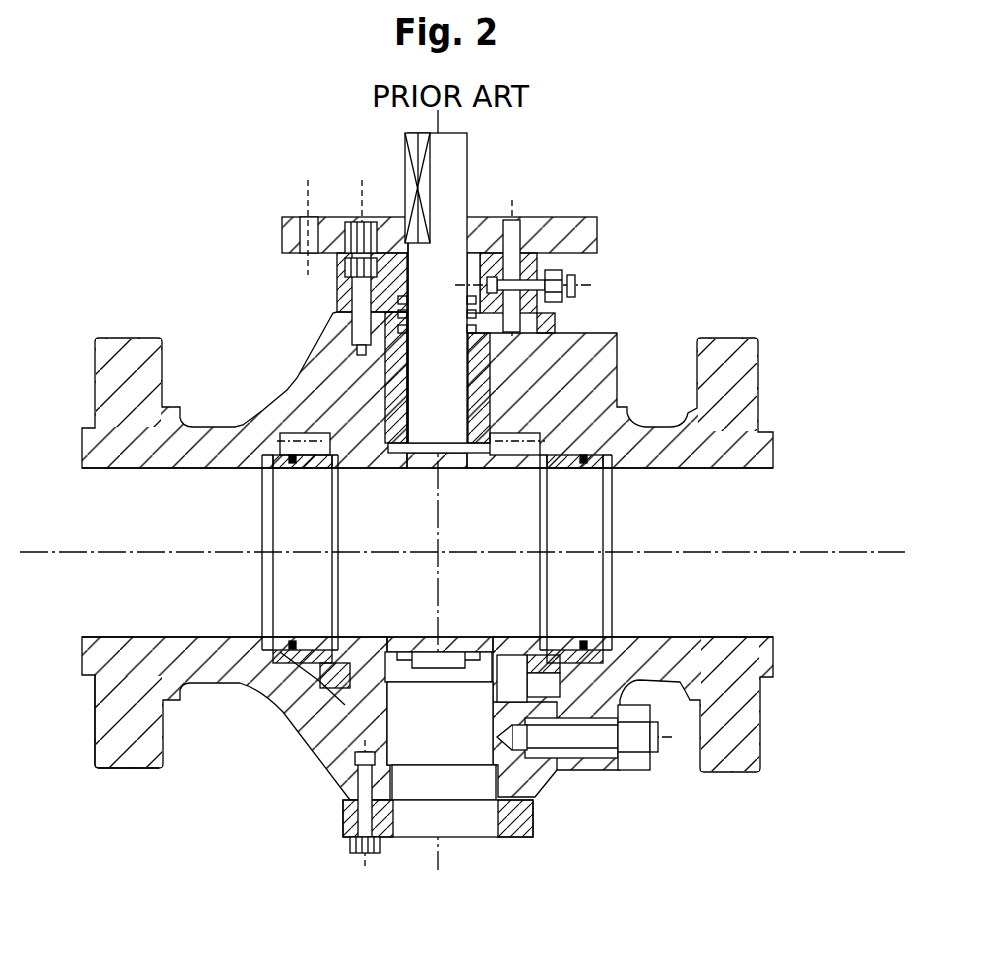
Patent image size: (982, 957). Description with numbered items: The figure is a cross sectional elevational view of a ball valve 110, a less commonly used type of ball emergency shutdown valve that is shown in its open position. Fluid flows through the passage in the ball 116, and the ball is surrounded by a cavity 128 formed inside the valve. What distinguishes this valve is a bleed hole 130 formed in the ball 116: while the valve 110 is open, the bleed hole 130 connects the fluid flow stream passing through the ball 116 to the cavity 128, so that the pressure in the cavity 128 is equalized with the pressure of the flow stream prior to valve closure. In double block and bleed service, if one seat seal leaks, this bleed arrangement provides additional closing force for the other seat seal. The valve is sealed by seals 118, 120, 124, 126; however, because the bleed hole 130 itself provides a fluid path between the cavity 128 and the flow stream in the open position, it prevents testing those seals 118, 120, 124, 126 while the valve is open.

The ball valve 110 is at (462, 514).
The ball 116 is at (523, 608).
The seal 118 is at (280, 667).
The seal 120 is at (597, 650).
The seal 124 is at (227, 685).
The seal 126 is at (613, 633).
The cavity 128 is at (335, 722).
The bleed hole 130 is at (362, 445).